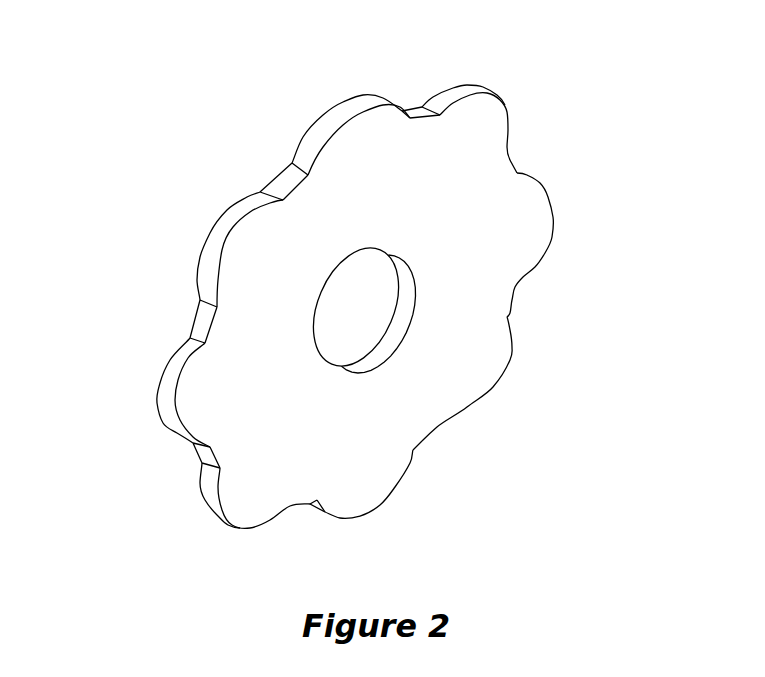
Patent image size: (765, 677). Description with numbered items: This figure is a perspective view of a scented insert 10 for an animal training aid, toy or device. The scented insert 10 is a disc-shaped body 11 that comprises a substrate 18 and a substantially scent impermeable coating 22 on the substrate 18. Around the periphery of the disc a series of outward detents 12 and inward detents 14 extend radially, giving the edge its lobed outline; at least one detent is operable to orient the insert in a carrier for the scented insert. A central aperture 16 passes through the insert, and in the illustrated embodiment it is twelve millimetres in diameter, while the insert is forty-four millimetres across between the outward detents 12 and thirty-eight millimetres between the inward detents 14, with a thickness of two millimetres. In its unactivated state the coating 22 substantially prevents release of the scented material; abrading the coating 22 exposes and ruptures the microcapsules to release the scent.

The scented insert 10 is at (147, 137).
The body 11 is at (453, 163).
The outward detent 12 is at (328, 112).
The inward detent 14 is at (198, 323).
The aperture 16 is at (380, 305).
The substrate 18 is at (470, 300).
The scent impermeable coating 22 is at (503, 240).